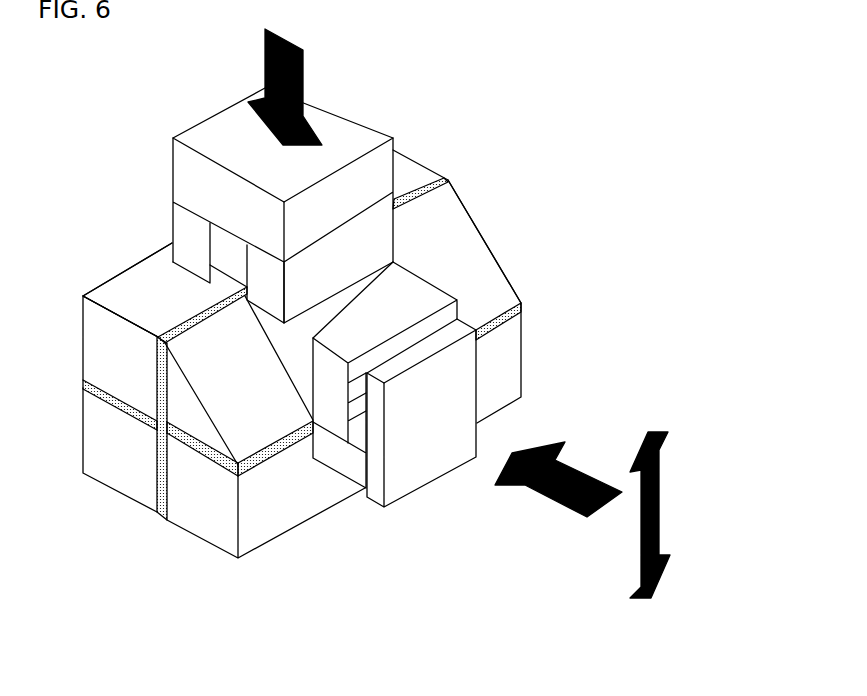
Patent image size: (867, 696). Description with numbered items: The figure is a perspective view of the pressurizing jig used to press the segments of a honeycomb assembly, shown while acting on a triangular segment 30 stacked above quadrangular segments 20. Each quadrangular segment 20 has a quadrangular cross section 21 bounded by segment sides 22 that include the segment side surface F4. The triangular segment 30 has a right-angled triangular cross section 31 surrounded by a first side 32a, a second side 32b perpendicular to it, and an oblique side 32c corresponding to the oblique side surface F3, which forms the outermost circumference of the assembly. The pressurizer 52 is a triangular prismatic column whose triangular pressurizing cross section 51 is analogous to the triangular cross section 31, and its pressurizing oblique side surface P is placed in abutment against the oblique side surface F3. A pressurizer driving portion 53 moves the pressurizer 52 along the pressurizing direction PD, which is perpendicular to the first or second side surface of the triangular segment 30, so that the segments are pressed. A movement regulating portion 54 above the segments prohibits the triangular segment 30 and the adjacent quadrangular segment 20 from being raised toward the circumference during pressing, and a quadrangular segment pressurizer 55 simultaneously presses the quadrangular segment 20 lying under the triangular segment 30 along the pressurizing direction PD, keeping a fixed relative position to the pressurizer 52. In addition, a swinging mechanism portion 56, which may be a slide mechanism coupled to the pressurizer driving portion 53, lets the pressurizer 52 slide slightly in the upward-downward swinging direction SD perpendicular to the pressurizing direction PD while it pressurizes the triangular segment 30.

The quadrangular segment 20 is at (200, 403).
The quadrangular cross section 21 is at (93, 350).
The segment side 22 is at (132, 320).
The triangular segment 30 is at (378, 289).
The triangular cross section 31 is at (157, 372).
The first side 32a is at (157, 427).
The second side 32b is at (193, 445).
The oblique side 32c is at (192, 377).
The triangular pressurizing cross section 51 is at (283, 343).
The pressurizer 52 is at (400, 275).
The pressurizer driving portion 53 is at (462, 412).
The movement regulating portion 54 is at (348, 135).
The quadrangular segment pressurizer 55 is at (337, 463).
The swinging mechanism portion 56 is at (543, 340).
The pressurizing oblique side surface P is at (282, 392).
The oblique side surface F3 is at (482, 255).
The segment side surface F4 is at (107, 290).
The pressurizing direction PD is at (540, 493).
The swinging direction SD is at (642, 530).